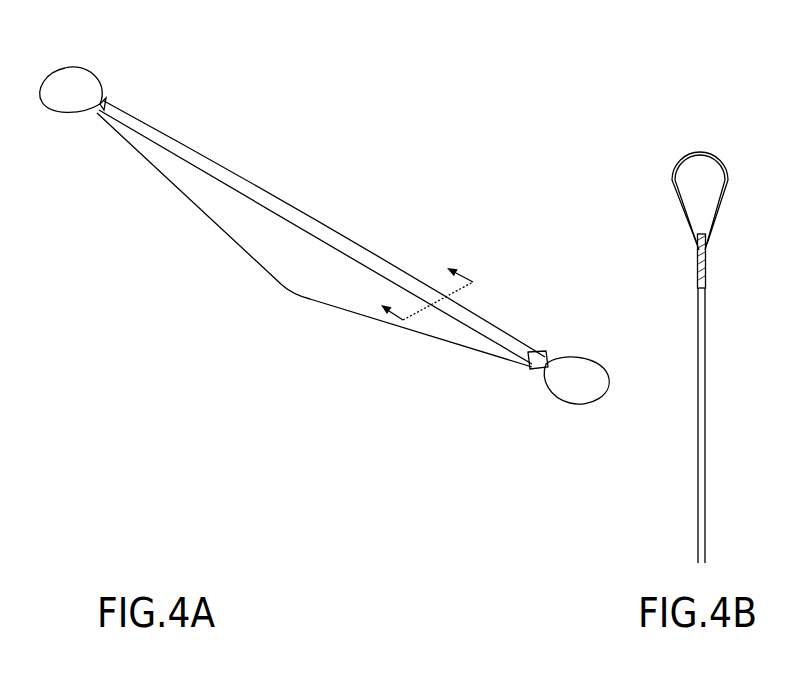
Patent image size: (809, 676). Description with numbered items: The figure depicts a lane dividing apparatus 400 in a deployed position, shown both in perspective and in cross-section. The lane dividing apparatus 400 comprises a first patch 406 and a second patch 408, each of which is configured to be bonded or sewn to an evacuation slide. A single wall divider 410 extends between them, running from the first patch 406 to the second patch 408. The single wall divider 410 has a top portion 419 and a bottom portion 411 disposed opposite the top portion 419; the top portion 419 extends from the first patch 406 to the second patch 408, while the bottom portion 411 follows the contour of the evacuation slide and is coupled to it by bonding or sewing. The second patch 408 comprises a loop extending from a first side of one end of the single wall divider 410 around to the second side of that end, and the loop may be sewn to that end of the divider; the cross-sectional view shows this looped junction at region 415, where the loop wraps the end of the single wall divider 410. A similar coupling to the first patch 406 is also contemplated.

In FIG. 4A, the lane dividing apparatus 400 is at (337, 158).
In FIG. 4B, the lane dividing apparatus 400 is at (695, 104).
In FIG. 4A, the first patch 406 is at (85, 92).
In FIG. 4A, the second patch 408 is at (575, 376).
In FIG. 4B, the second patch 408 is at (707, 151).
In FIG. 4A, the single wall divider 410 is at (251, 240).
In FIG. 4B, the single wall divider 410 is at (700, 480).
In FIG. 4A, the bottom portion 411 is at (300, 292).
In FIG. 4B, the junction / splice region 415 is at (703, 275).
In FIG. 4A, the top portion 419 is at (227, 180).